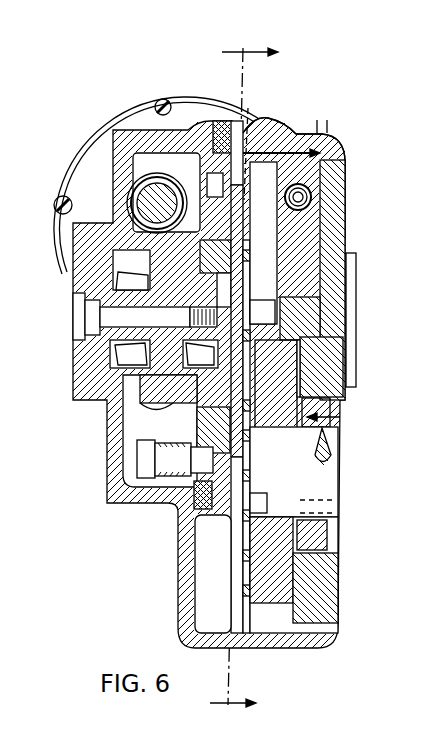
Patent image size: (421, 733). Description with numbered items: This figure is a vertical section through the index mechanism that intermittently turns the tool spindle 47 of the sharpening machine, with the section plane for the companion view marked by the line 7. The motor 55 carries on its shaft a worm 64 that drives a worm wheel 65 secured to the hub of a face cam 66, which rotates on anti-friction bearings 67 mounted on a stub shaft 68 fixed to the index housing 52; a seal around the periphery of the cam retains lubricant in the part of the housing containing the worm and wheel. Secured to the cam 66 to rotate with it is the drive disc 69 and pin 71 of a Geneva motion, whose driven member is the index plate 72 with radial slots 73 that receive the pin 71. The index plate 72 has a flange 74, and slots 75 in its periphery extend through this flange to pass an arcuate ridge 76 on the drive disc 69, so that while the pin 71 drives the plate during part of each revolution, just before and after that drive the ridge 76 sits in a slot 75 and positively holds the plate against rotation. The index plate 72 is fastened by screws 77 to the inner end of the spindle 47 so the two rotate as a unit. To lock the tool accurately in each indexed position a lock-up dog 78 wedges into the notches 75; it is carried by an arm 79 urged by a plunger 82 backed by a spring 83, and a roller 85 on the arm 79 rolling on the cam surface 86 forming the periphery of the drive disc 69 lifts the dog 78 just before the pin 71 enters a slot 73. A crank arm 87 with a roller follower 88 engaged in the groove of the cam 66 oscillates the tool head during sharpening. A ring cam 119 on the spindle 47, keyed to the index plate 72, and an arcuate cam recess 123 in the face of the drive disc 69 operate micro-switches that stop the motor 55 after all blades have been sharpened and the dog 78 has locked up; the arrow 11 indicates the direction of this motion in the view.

The section line 7- 7 is at (244, 374).
The direction arrow 11 is at (334, 416).
The spindle 47 is at (322, 480).
The seal 52 is at (265, 650).
The motor 55 is at (72, 133).
The worm 64 is at (143, 190).
The worm wheel 65 is at (88, 250).
The face cam 66 is at (190, 207).
The anti-friction bearings 67 is at (112, 368).
The stub shaft 68 is at (120, 330).
The drive disc 69 is at (334, 222).
The pin 71 is at (270, 308).
The index plate 72 is at (290, 382).
The radial slots 73 is at (340, 598).
The flange 74 is at (240, 600).
The slot 75 is at (272, 330).
The arcuate ridge 76 is at (300, 360).
The screws 77 is at (338, 468).
The lock-up dog 78 is at (322, 336).
The arm 79 is at (352, 256).
The plunger 82 is at (342, 162).
The spring 83 is at (300, 197).
The roller 85 is at (247, 210).
The cam surface 86 is at (245, 135).
The crank arm 87 is at (120, 489).
The roller follower 88 is at (168, 506).
The ring cam 119 is at (332, 408).
The arcuate cam recess 123 is at (293, 152).